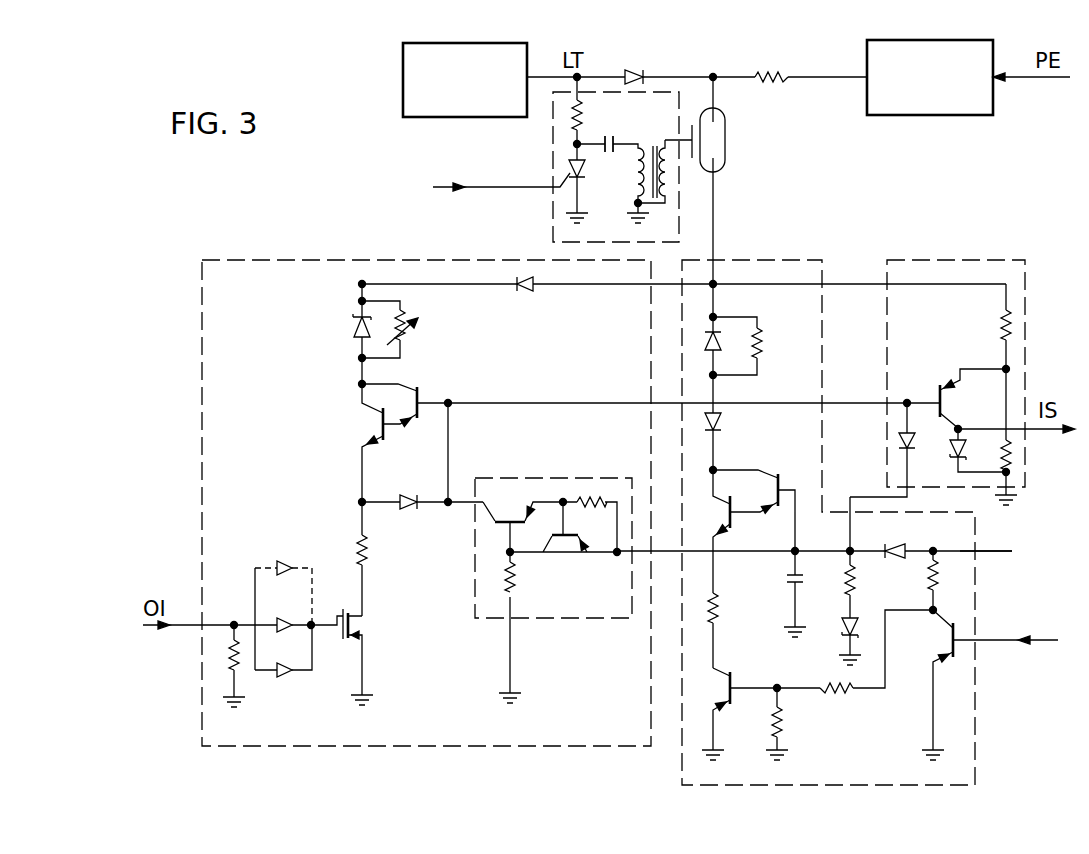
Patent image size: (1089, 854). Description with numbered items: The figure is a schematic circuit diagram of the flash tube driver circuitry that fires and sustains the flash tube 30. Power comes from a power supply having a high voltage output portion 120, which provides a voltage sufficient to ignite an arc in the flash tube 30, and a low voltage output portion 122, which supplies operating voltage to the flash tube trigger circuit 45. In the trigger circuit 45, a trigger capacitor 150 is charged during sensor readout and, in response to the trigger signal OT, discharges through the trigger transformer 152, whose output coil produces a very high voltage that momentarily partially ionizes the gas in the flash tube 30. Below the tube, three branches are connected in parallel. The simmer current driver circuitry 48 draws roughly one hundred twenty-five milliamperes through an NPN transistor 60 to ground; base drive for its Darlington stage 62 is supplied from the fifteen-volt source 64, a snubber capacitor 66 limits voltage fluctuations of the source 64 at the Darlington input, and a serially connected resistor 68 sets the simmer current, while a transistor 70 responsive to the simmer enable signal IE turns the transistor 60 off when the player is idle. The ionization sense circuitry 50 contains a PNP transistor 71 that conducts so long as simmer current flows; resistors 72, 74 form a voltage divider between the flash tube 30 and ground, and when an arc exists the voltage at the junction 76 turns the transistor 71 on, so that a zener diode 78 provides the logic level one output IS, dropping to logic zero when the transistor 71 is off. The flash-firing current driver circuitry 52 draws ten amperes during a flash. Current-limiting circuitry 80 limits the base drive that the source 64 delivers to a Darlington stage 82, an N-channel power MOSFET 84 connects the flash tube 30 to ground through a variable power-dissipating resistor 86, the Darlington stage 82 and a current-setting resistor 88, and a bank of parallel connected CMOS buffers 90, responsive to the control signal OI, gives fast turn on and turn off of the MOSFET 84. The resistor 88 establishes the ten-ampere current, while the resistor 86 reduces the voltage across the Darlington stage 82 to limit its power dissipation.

The low voltage output portion 122 is at (527, 47).
The high voltage output portion 120 is at (867, 50).
The flash tube trigger circuit 45 is at (562, 159).
The trigger capacitor 150 is at (607, 132).
The trigger transformer 152 is at (626, 168).
The flash tube 30 is at (725, 144).
The junction 76 is at (715, 272).
The simmer current driver circuitry 48 is at (797, 260).
The ionization sense circuitry 50 is at (1008, 260).
The flash-firing current driver circuitry 52 is at (340, 260).
The variable power-dissipating resistor 86 is at (417, 336).
The Darlington stage 82 is at (395, 436).
The CMOS buffers 90 is at (273, 545).
The N-channel power MOSFET 84 is at (337, 616).
The current-setting resistor 88 is at (372, 562).
The current-limiting circuitry 80 is at (473, 593).
The Darlington stage 62 is at (751, 459).
The resistor 68 is at (719, 606).
The NPN transistor 60 is at (723, 672).
The snubber capacitor 66 is at (787, 578).
The transistor 70 is at (957, 622).
The 15-volt source 64 is at (1015, 553).
The resistor 72 is at (1000, 326).
The PNP transistor 71 is at (948, 400).
The zener diode 78 is at (949, 448).
The resistor 74 is at (1013, 458).